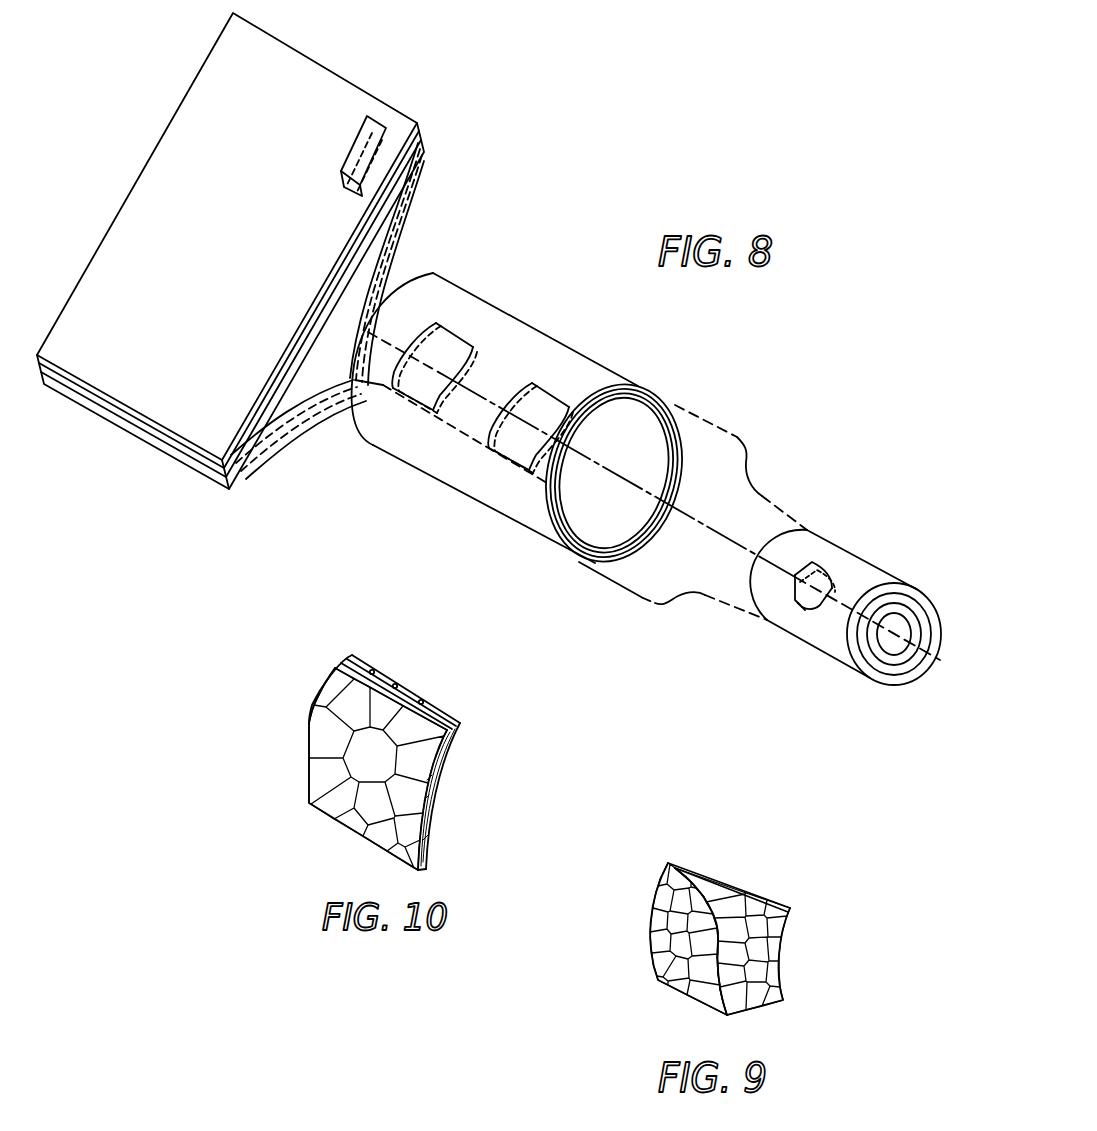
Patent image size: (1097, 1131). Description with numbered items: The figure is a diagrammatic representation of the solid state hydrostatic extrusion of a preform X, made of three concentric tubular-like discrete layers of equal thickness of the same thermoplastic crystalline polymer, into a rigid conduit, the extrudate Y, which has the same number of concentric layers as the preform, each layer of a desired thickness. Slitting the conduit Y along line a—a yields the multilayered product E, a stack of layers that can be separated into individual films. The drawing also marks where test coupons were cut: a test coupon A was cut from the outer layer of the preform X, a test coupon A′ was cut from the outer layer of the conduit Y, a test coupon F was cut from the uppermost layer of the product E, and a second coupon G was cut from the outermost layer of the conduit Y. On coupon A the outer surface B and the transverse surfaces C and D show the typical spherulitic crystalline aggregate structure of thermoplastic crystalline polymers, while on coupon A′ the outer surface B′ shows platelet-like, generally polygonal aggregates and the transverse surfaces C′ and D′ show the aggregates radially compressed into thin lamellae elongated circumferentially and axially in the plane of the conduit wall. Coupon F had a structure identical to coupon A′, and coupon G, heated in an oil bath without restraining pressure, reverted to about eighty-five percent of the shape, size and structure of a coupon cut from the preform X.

In FIG. 8, the multilayered product E is at (176, 81).
In FIG. 8, the test coupon F is at (349, 150).
In FIG. 8, the extrudate Y is at (607, 312).
In FIG. 8, the preform X is at (830, 722).
In FIG. 8, the second coupon G is at (545, 400).
In FIG. 8, the line a— a is at (390, 391).
In FIG. 8, the test coupon A′ is at (463, 359).
In FIG. 10, the test coupon A′ is at (368, 762).
In FIG. 8, the transverse surface D′ is at (465, 334).
In FIG. 10, the transverse surface D′ is at (419, 705).
In FIG. 8, the transverse surface C′ is at (472, 352).
In FIG. 10, the transverse surface C′ is at (438, 775).
In FIG. 8, the outer surface B′ is at (417, 388).
In FIG. 10, the outer surface B′ is at (315, 765).
In FIG. 8, the test coupon A is at (824, 587).
In FIG. 9, the test coupon A is at (715, 900).
In FIG. 8, the transverse surface D is at (830, 568).
In FIG. 9, the transverse surface D is at (725, 877).
In FIG. 8, the transverse surface C is at (826, 604).
In FIG. 9, the transverse surface C is at (767, 943).
In FIG. 8, the outer surface B is at (792, 590).
In FIG. 9, the outer surface B is at (655, 922).